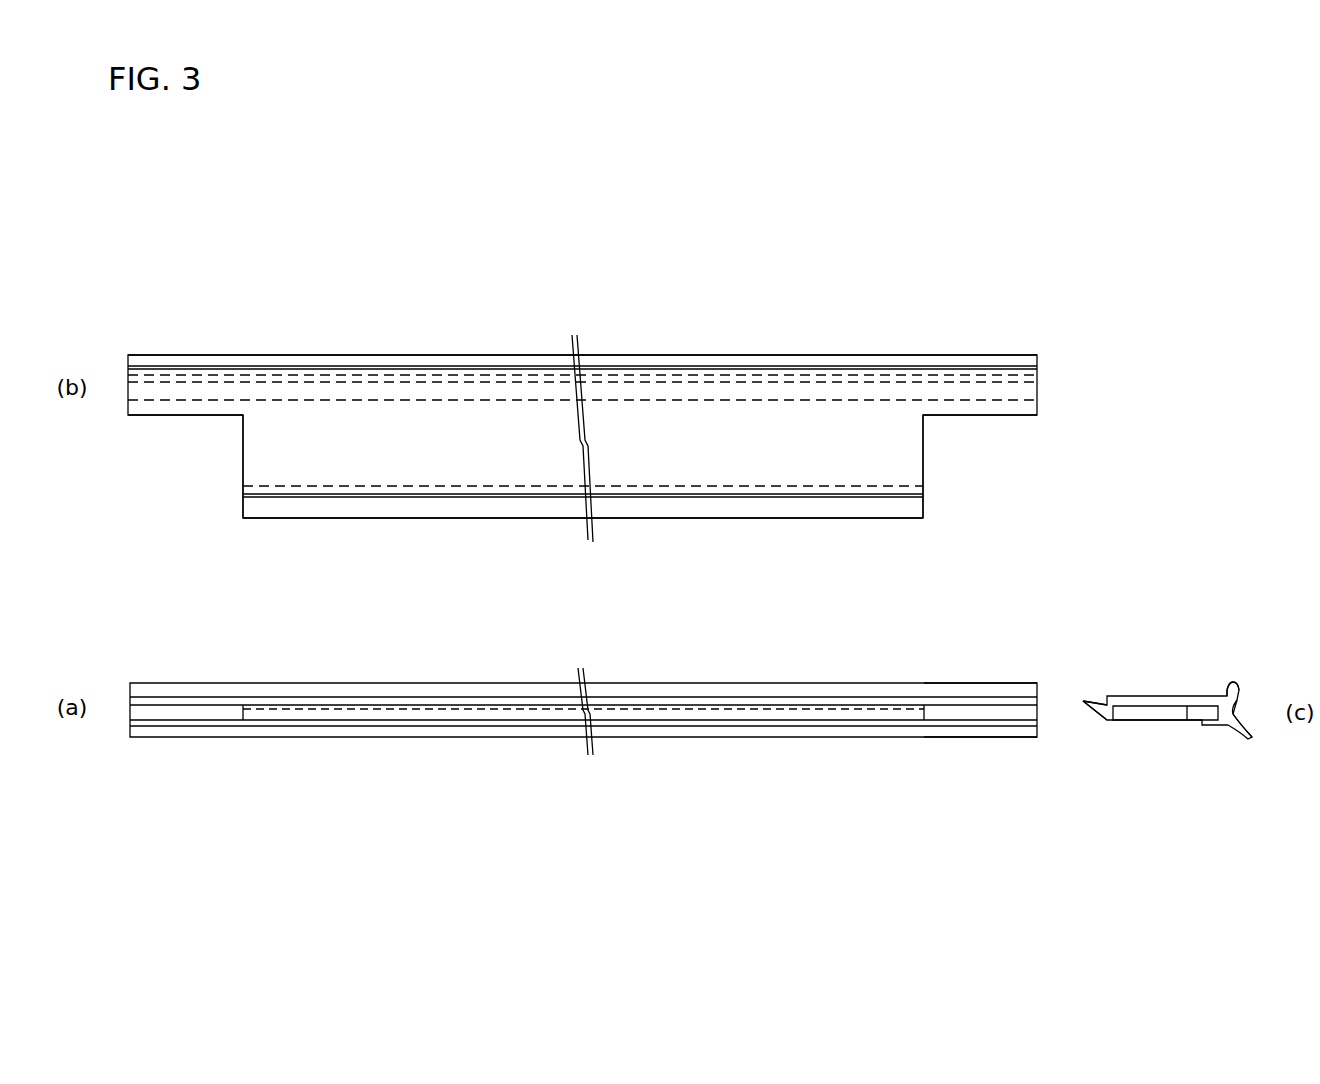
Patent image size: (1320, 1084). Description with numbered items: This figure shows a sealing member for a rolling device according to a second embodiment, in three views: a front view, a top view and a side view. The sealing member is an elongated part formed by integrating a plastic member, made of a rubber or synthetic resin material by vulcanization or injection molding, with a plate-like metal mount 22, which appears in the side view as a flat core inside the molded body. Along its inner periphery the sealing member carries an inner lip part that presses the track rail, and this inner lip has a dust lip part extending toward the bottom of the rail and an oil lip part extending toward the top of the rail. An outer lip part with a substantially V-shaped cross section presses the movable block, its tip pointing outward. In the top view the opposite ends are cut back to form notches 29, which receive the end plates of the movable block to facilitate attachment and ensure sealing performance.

The metal mount 22 is at (1160, 715).
The notches 29 is at (228, 435).